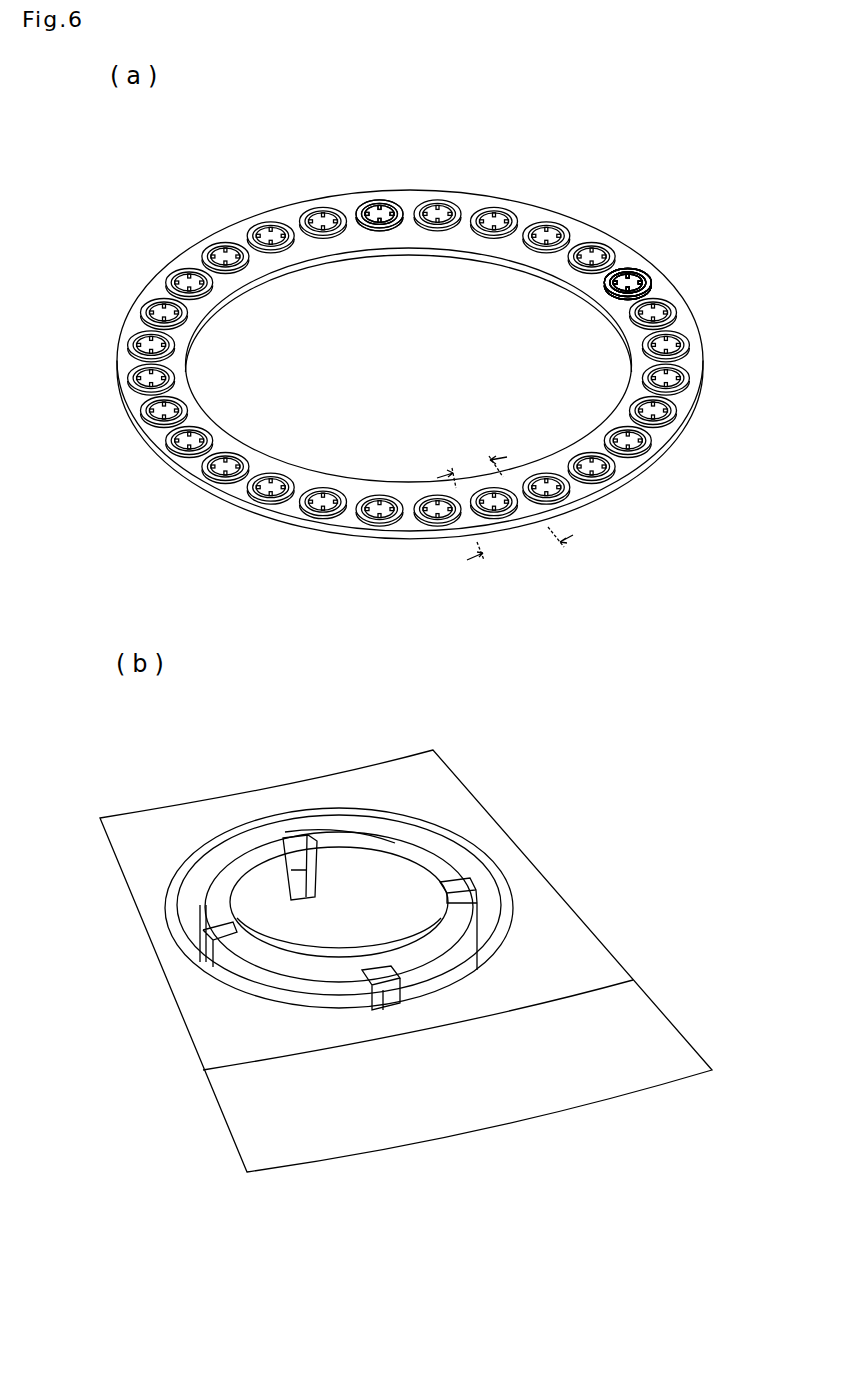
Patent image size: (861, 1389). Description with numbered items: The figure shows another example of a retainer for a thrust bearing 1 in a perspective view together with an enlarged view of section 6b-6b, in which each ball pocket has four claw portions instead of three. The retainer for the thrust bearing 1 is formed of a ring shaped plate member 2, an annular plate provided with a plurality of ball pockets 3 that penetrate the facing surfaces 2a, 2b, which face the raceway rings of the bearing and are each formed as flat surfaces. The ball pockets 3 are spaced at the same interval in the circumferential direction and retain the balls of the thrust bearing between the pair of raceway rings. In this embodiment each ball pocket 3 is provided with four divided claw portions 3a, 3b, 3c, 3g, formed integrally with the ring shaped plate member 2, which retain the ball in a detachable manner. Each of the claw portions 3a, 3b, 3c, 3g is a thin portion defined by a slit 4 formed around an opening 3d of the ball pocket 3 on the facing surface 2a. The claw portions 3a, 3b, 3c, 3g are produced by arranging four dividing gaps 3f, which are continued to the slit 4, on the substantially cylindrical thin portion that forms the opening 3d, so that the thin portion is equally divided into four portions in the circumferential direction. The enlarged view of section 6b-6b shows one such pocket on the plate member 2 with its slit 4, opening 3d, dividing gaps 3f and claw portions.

The retainer for a thrust bearing 1 is at (585, 197).
The ring shaped plate member 2 is at (288, 214).
The facing surface 2a is at (192, 462).
The facing surface 2b is at (283, 533).
The ball pocket 3 is at (440, 202).
The claw portion 3a is at (640, 278).
The claw portion 3b is at (625, 272).
The claw portion 3c is at (615, 277).
The opening 3d is at (370, 204).
The dividing gap 3f is at (300, 850).
The claw portion 3g is at (618, 284).
The slit 4 is at (652, 273).
The section 6b- 6b is at (505, 507).